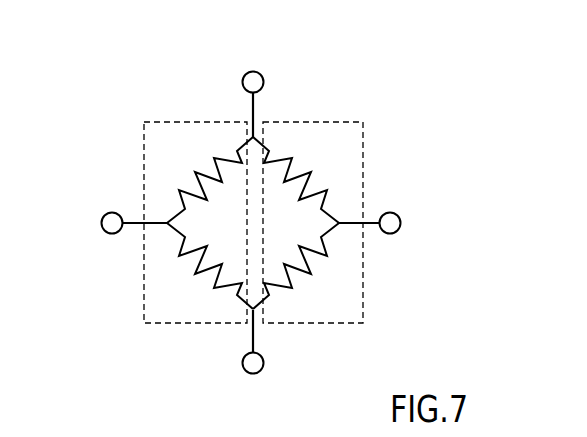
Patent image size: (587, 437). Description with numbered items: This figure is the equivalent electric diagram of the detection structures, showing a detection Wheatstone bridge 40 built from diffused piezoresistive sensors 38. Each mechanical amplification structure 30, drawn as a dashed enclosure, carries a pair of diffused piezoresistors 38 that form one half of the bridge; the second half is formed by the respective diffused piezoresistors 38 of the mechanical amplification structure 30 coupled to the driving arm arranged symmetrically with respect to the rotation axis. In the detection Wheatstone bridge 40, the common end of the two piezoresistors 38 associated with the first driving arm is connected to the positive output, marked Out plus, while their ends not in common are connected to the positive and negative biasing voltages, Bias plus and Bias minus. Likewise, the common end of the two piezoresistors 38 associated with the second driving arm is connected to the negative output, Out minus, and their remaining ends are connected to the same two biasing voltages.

The mechanical amplification structure 30 is at (188, 118).
The diffused piezoresistive sensor 38 is at (187, 192).
The detection Wheatstone bridge 40 is at (425, 162).